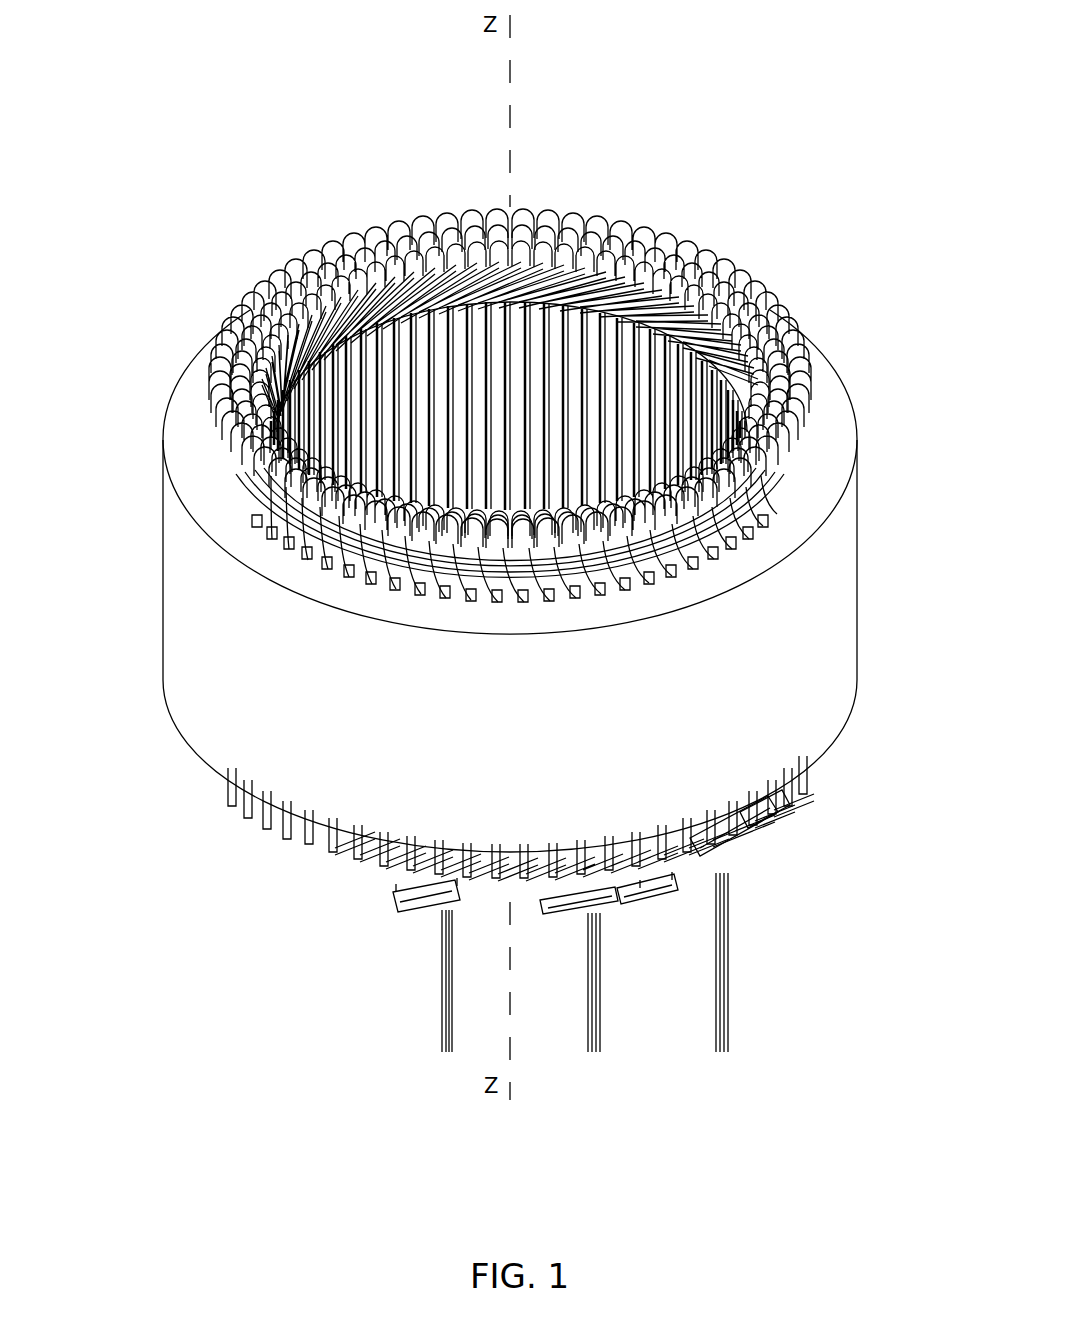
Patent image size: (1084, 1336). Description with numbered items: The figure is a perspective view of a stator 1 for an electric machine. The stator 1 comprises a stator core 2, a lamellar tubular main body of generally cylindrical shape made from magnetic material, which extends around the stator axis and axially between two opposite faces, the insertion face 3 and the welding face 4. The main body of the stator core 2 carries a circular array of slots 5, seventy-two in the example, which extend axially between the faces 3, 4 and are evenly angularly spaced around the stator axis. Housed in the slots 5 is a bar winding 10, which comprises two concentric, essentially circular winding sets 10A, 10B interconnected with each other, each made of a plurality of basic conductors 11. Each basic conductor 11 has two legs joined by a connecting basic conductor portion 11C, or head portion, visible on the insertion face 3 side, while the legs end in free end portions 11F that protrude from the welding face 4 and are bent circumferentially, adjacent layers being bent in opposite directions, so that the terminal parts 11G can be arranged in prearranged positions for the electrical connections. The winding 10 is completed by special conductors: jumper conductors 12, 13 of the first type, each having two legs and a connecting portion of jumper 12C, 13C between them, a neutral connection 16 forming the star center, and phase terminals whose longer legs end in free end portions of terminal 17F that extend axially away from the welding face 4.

The stator 1 is at (770, 118).
The stator core 2 is at (860, 597).
The insertion face 3 is at (830, 408).
The welding face 4 is at (808, 752).
The slots 5 is at (248, 510).
The bar winding 10 is at (207, 407).
The first winding set 10A is at (253, 293).
The second winding set 10B is at (355, 258).
The basic conductor 11 is at (625, 247).
The connecting basic conductor portion 11C is at (623, 248).
The free end portion 11F is at (247, 827).
The terminal parts 11G is at (338, 880).
The jumper conductor 12 is at (738, 866).
The connecting portion of jumper 12C is at (418, 903).
The jumper conductor 13 is at (777, 830).
The connecting portion of jumper 13C is at (663, 890).
The neutral connection 16 is at (775, 808).
The free end portion of terminal 17F is at (732, 980).